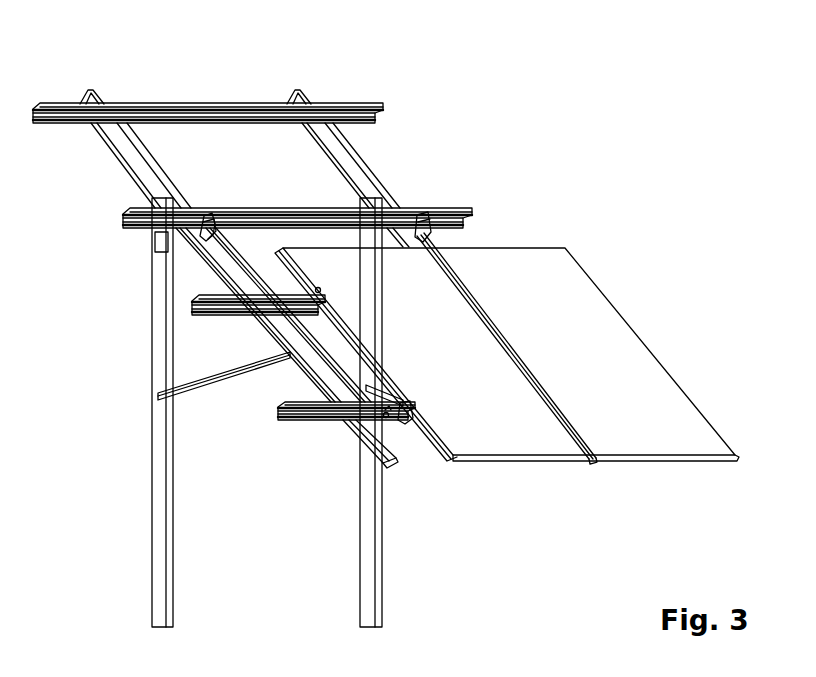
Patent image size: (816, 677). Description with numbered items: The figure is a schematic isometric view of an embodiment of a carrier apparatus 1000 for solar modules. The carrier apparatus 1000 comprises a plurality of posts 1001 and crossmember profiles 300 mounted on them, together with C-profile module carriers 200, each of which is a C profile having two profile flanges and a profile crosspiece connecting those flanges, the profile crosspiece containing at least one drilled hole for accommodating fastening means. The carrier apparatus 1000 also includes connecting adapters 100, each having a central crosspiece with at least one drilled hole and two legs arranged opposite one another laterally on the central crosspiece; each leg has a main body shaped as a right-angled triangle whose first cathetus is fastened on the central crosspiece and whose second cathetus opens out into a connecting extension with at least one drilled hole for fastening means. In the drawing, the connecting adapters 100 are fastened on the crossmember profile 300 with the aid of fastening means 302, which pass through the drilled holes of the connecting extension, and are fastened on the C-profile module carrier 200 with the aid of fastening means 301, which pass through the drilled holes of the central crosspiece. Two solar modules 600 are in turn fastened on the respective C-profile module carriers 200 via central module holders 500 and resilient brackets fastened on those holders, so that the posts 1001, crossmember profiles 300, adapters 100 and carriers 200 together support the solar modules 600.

The carrier apparatus 1000 is at (526, 64).
The post 1001 is at (156, 566).
The connecting adapter 100 is at (211, 233).
The C-profile module carrier 200 is at (351, 103).
The crossmember profile 300 is at (137, 160).
The fastening means 301 is at (211, 224).
The fastening means 302 is at (205, 236).
The central module holder 500 is at (302, 263).
The solar module 600 is at (507, 461).